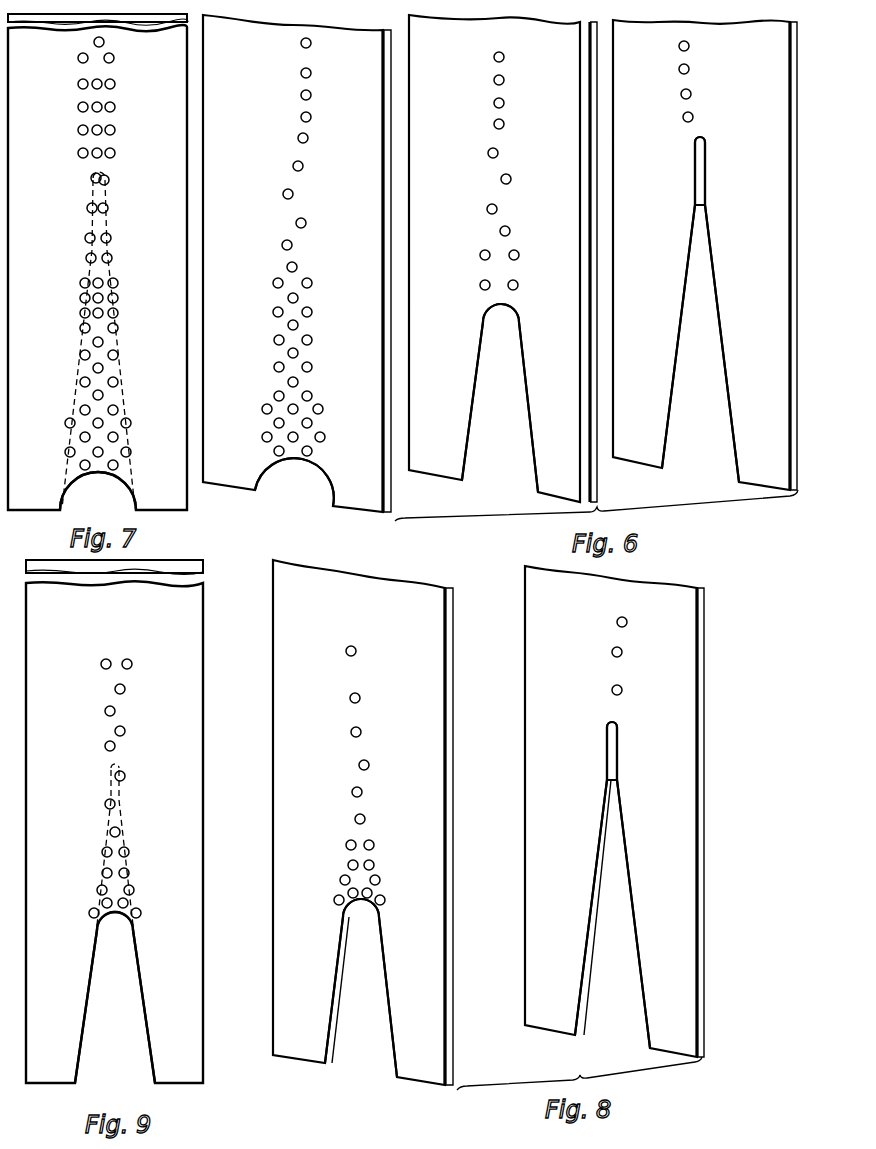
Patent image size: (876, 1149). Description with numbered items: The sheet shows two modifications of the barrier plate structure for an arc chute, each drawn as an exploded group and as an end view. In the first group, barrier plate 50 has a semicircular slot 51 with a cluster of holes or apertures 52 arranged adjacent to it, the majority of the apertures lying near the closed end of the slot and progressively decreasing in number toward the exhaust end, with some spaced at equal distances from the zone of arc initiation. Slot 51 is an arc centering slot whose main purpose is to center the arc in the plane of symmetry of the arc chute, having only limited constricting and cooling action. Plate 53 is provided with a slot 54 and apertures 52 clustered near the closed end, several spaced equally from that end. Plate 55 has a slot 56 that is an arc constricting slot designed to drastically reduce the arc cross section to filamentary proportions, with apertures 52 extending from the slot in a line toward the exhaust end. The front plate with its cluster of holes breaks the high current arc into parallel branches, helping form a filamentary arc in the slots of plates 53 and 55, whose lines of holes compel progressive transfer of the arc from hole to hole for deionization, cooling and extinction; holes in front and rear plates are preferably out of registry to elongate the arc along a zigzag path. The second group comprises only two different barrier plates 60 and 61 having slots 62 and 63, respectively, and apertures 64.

In FIG. 7, the barrier plate 50 is at (164, 75).
In FIG. 7, the semicircular slot 51 is at (87, 497).
In FIG. 7, the apertures 52 is at (127, 422).
In FIG. 6, the apertures 52 is at (518, 258).
In FIG. 6, the plate 53 is at (556, 70).
In FIG. 6, the slot 54 is at (523, 412).
In FIG. 6, the plate 55 is at (752, 60).
In FIG. 6, the slot 56 is at (714, 318).
In FIG. 9, the barrier plate 60 is at (197, 635).
In FIG. 8, the barrier plate 60 is at (405, 592).
In FIG. 8, the barrier plate 61 is at (672, 593).
In FIG. 9, the slot 62 is at (93, 998).
In FIG. 8, the slot 62 is at (380, 991).
In FIG. 8, the slot 63 is at (633, 950).
In FIG. 9, the apertures 64 is at (126, 873).
In FIG. 8, the apertures 64 is at (372, 847).